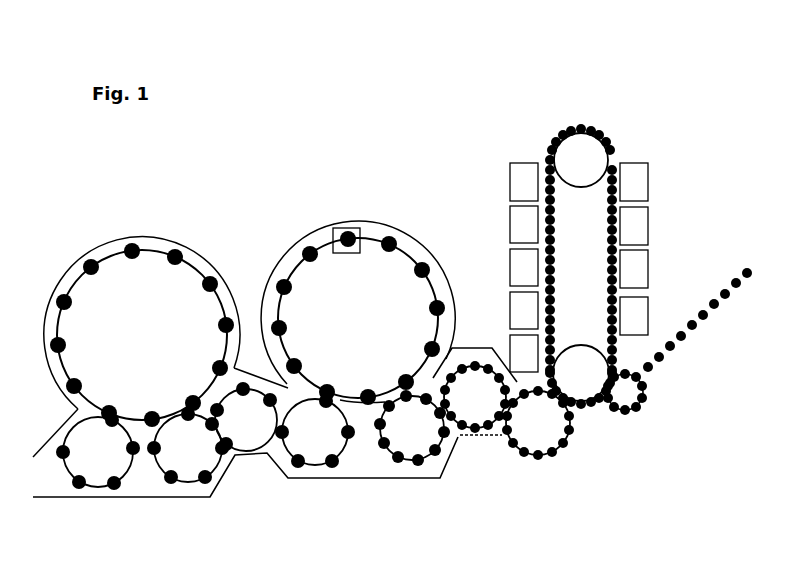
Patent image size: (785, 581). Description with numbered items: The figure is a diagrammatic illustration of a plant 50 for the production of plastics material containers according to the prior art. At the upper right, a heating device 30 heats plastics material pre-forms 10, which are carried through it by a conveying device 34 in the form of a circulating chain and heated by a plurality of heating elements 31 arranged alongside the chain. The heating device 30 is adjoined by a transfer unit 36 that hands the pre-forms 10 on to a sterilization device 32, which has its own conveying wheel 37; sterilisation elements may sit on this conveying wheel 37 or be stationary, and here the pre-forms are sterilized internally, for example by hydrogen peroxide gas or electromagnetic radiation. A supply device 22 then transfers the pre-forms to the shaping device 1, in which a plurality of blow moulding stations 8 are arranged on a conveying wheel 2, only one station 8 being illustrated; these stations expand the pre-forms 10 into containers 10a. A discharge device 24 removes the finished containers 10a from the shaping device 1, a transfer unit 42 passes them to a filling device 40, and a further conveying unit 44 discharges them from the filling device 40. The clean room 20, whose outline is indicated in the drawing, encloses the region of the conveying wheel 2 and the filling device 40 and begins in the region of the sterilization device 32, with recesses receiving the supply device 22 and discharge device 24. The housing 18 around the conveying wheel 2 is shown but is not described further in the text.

The shaping device 1 is at (342, 200).
The conveying wheel 2 is at (403, 300).
The blow moulding station 8 is at (358, 228).
The plastics material pre-forms 10 is at (577, 433).
The plastics material containers 10a is at (343, 467).
The cylinder housing / shell 18 is at (407, 230).
The clean room 20 is at (295, 226).
The supply device 22 is at (432, 438).
The discharge device 24 is at (308, 458).
The heating device 30 is at (536, 128).
The heating elements 31 is at (522, 183).
The sterilization device 32 is at (474, 328).
The conveying device 34 is at (583, 150).
The transfer unit 36 is at (530, 438).
The conveying wheel 37 is at (473, 412).
The filling device 40 is at (112, 277).
The transfer unit 42 is at (212, 450).
The conveying unit 44 is at (80, 458).
The plant 50 is at (278, 131).